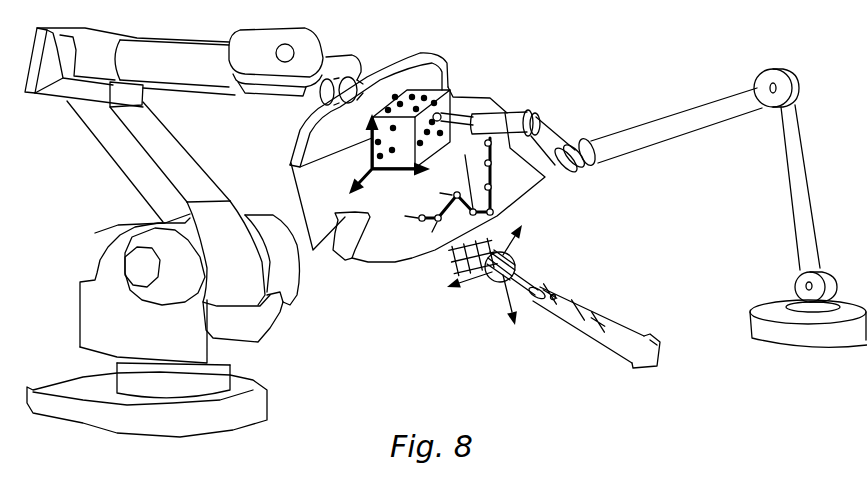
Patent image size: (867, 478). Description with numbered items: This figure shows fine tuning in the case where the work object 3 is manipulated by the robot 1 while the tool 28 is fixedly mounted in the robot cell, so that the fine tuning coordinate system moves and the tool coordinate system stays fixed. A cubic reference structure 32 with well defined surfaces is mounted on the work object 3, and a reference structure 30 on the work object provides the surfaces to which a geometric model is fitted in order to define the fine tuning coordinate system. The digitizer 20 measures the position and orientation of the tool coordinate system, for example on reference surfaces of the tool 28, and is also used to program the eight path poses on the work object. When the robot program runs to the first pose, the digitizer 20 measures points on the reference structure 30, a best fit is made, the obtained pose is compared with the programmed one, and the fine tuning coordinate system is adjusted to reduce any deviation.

The industrial robot 1 is at (76, 176).
The work object 3 is at (390, 245).
The digitizer 20 is at (758, 185).
The tool 28 is at (517, 262).
The reference structure 30 is at (443, 107).
The cubic reference structure 32 is at (435, 262).